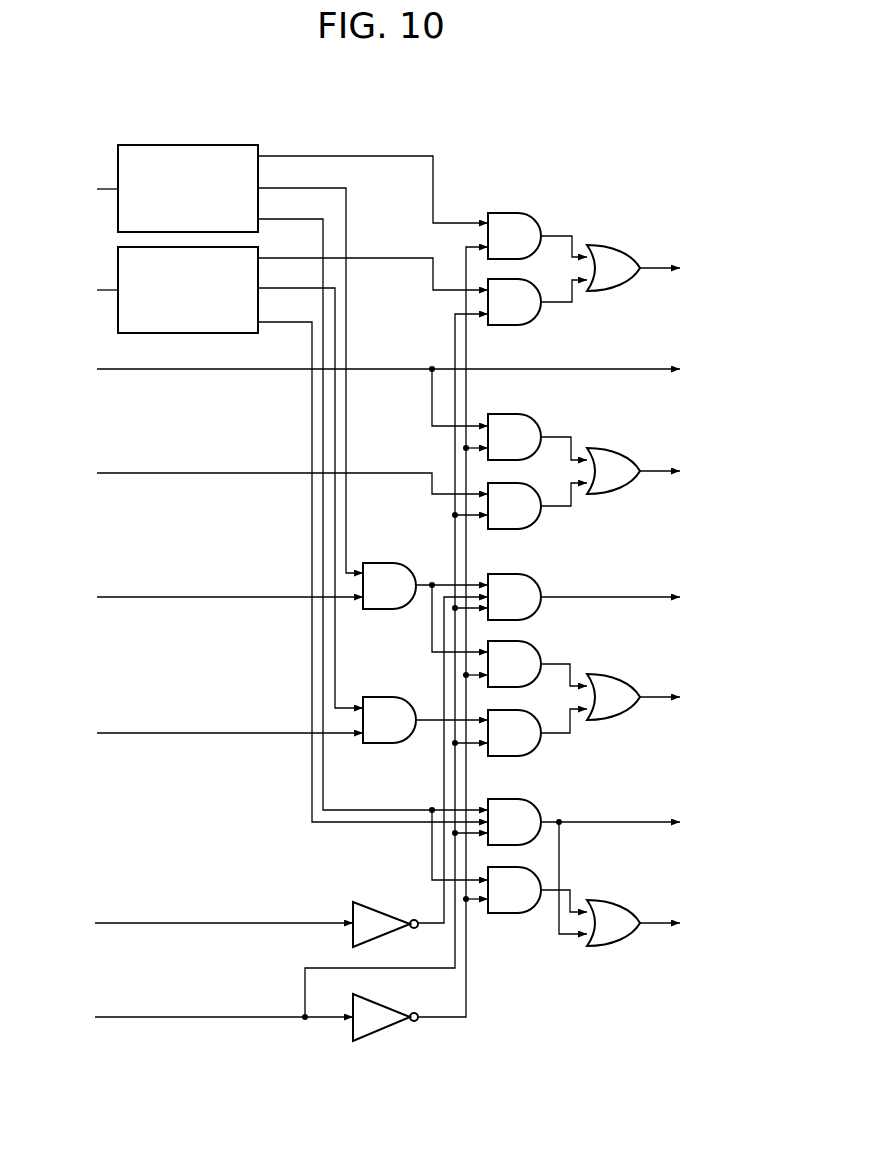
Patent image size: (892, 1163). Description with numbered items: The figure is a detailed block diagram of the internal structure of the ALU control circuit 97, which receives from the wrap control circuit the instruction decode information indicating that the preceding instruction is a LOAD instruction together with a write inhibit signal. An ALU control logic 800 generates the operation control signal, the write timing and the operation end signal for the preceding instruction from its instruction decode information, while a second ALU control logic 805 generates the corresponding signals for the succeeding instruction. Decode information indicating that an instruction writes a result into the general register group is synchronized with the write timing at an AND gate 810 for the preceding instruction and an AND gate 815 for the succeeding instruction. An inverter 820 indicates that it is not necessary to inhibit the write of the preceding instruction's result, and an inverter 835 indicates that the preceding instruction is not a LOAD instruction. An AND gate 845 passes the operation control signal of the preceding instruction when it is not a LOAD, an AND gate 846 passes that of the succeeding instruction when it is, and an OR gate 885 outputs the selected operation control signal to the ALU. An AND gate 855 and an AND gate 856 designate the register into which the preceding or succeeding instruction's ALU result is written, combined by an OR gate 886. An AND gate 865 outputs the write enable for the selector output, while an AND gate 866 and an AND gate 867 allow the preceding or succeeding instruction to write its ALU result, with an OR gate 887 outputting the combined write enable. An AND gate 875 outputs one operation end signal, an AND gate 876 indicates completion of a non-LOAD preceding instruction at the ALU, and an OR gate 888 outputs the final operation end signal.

The ALU control circuit 97 is at (492, 107).
The ALU control logic 800 is at (186, 145).
The ALU control logic 805 is at (196, 334).
The AND gate 810 is at (398, 563).
The AND gate 815 is at (392, 697).
The inverter 820 is at (360, 905).
The inverter 835 is at (365, 1042).
The AND gate 845 is at (532, 213).
The AND gate 846 is at (538, 323).
The AND gate 855 is at (528, 415).
The AND gate 856 is at (538, 526).
The AND gate 865 is at (538, 578).
The AND gate 866 is at (538, 645).
The AND gate 867 is at (538, 751).
The AND gate 875 is at (540, 809).
The AND gate 876 is at (520, 913).
The OR gate 885 is at (612, 245).
The OR gate 886 is at (625, 448).
The OR gate 887 is at (632, 684).
The OR gate 888 is at (622, 907).